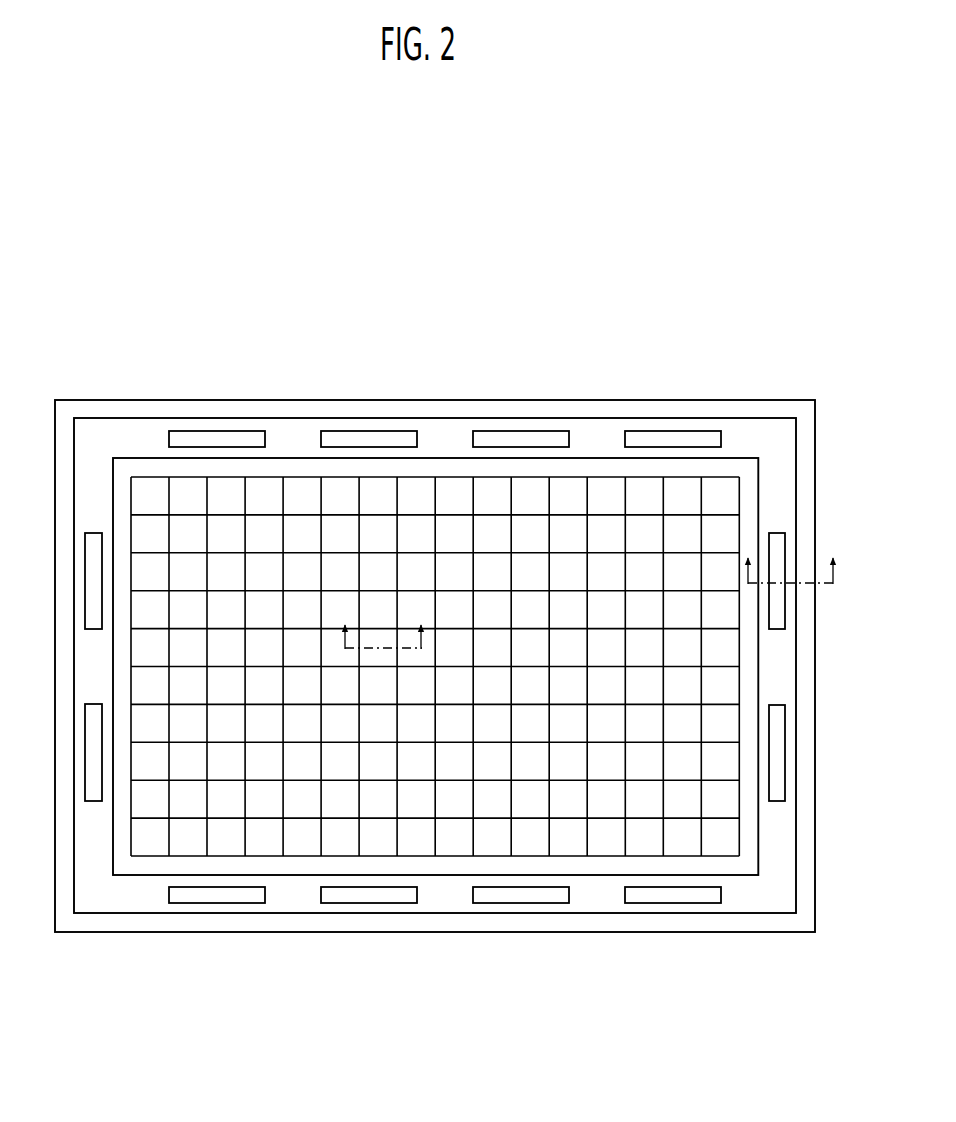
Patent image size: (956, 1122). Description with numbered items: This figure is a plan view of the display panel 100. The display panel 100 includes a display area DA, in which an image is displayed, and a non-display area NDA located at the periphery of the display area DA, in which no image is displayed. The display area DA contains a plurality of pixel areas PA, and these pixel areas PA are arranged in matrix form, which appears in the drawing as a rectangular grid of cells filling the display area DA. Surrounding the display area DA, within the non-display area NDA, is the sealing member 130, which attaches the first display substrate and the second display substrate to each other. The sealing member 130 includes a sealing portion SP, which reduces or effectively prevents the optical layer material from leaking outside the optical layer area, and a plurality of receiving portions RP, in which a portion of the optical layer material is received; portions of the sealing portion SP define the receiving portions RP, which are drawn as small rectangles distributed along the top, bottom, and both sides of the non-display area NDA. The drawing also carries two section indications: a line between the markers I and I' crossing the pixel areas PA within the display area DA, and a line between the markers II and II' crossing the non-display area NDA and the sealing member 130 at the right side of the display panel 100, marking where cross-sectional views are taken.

The display panel 100 is at (501, 331).
The sealing member 130 is at (702, 342).
The non-display area NDA is at (179, 390).
The display area DA is at (274, 470).
The pixel areas PA is at (336, 497).
The sealing portion SP is at (595, 435).
The receiving portion RP is at (673, 435).
The section line I is at (384, 622).
The section line I' is at (422, 605).
The section line II is at (790, 557).
The section line II' is at (831, 540).